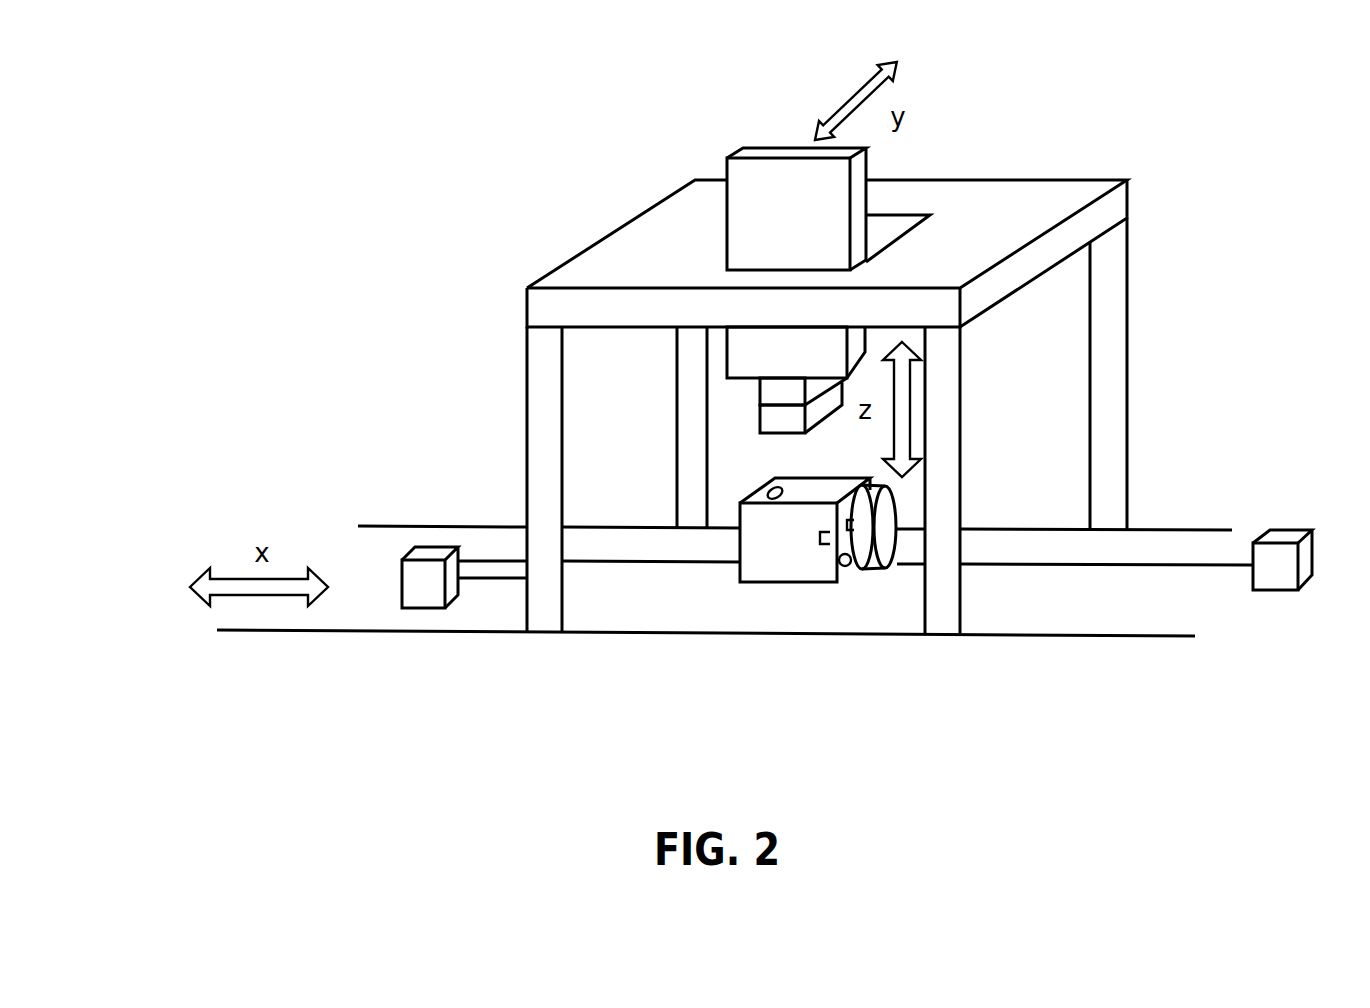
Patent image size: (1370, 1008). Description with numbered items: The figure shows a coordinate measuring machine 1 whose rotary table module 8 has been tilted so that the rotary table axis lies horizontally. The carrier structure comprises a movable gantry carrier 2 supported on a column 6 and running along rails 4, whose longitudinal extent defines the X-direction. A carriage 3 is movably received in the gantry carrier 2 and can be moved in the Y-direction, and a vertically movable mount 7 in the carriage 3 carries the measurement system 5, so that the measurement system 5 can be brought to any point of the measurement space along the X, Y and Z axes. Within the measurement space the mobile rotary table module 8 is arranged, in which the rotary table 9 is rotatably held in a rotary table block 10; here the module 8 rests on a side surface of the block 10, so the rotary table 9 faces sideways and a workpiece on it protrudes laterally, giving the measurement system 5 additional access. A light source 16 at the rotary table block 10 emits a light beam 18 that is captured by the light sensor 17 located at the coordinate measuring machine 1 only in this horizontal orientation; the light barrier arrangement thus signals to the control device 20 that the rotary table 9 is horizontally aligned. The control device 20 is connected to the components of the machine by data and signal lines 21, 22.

The coordinate measuring machine 1 is at (427, 320).
The gantry carrier 2 is at (608, 258).
The carriage 3 is at (793, 148).
The rail 4 is at (387, 630).
The measurement system 5 is at (782, 417).
The column 6 is at (527, 423).
The mount 7 is at (760, 400).
The rotary table module 8 is at (730, 595).
The rotary table 9 is at (882, 567).
The rotary table block 10 is at (790, 560).
The light source 16 is at (843, 573).
The light sensor 17 is at (1278, 570).
The light beam 18 is at (1069, 565).
The control device 20 is at (422, 592).
The data and signal line 21 is at (482, 578).
The data and signal line 22 is at (647, 561).